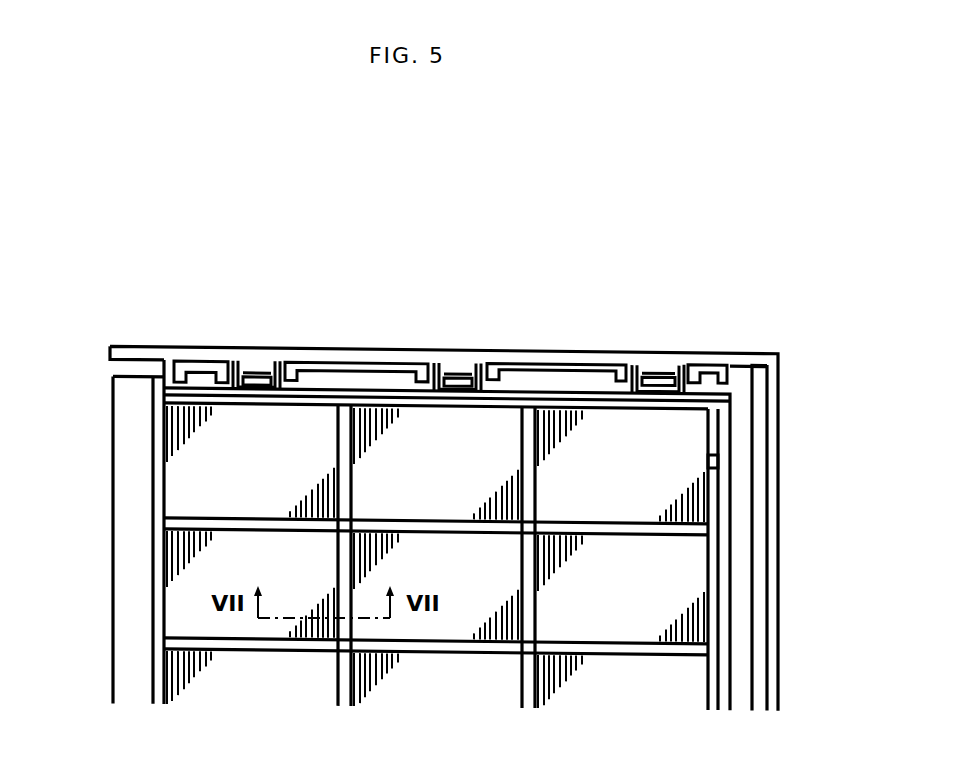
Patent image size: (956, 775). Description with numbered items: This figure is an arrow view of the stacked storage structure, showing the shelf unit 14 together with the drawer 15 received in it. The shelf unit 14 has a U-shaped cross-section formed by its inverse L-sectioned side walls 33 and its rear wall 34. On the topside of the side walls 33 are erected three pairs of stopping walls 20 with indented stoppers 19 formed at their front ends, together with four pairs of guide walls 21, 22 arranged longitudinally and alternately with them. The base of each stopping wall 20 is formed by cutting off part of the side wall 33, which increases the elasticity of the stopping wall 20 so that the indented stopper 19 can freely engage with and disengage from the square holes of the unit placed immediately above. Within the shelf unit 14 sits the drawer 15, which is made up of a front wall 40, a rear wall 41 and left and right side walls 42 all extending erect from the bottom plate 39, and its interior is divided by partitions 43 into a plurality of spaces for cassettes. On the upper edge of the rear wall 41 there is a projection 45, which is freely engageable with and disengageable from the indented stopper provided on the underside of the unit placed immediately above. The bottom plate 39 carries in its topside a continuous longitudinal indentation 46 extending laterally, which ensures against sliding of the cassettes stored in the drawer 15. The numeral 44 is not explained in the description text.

The shelf unit 14 is at (780, 382).
The drawer 15 is at (114, 410).
The indented stopper 19 is at (450, 373).
The stopping wall 20 is at (672, 373).
The guide wall 21 is at (722, 370).
The guide wall 22 is at (605, 372).
The side wall 33 is at (558, 357).
The rear wall 34 is at (773, 502).
The bottom plate 39 is at (167, 468).
The front wall 40 is at (155, 557).
The rear wall 41 is at (713, 458).
The side wall 42 is at (657, 410).
The partition 43 is at (525, 682).
The outer wall 44 is at (132, 590).
The projection 45 is at (713, 583).
The longitudinal indentation 46 is at (310, 645).